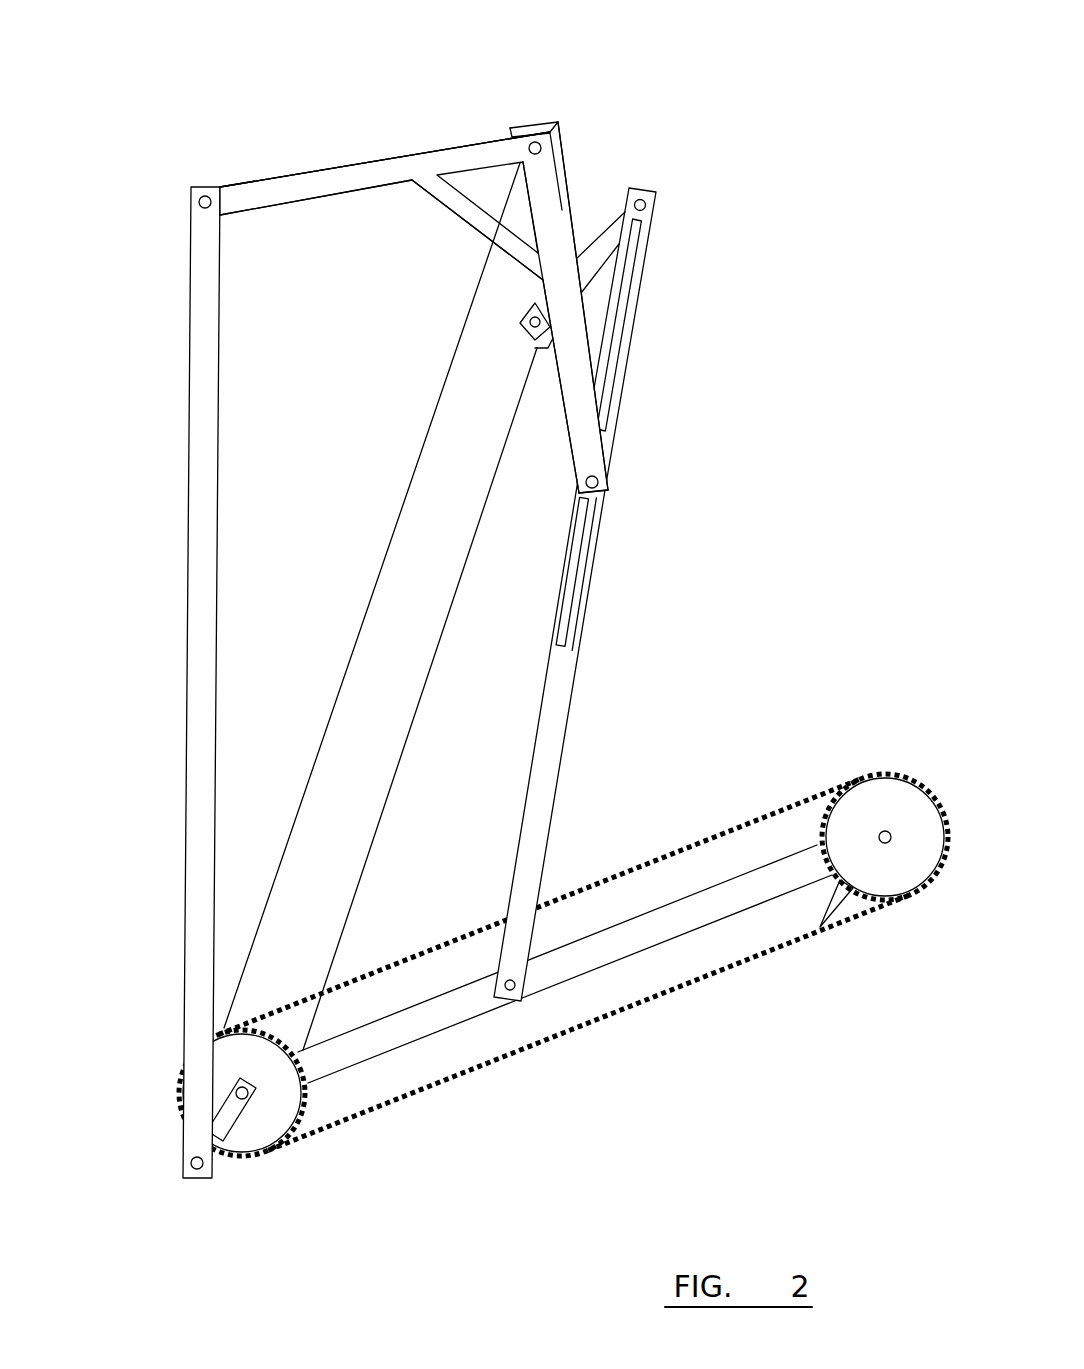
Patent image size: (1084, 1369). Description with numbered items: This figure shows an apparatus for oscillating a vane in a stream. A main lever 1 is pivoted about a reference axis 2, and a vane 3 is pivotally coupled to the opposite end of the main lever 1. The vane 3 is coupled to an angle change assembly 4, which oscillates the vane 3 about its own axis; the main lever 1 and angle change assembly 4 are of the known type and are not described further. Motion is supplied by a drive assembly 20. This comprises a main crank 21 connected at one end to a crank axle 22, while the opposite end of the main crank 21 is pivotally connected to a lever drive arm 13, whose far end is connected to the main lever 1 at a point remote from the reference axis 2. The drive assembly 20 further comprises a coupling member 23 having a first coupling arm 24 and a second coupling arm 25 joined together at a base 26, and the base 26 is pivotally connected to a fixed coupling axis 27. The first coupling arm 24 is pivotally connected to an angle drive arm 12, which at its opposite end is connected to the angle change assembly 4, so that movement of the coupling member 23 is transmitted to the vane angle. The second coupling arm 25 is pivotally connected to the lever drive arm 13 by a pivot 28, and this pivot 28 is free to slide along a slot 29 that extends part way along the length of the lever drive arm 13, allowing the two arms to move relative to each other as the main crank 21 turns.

The main lever 1 is at (613, 940).
The reference axis 2 is at (262, 1100).
The vane 3 is at (858, 910).
The angle change assembly 4 is at (158, 1087).
The angle drive arm 12 is at (200, 683).
The lever drive arm 13 is at (557, 745).
The drive assembly 20 is at (688, 199).
The main crank 21 is at (603, 248).
The crank axle 22 is at (520, 321).
The coupling member 23 is at (353, 148).
The first coupling arm 24 is at (268, 190).
The second coupling arm 25 is at (575, 388).
The base 26 is at (471, 160).
The fixed coupling axis 27 is at (538, 135).
The pivot 28 is at (603, 481).
The slot 29 is at (582, 570).